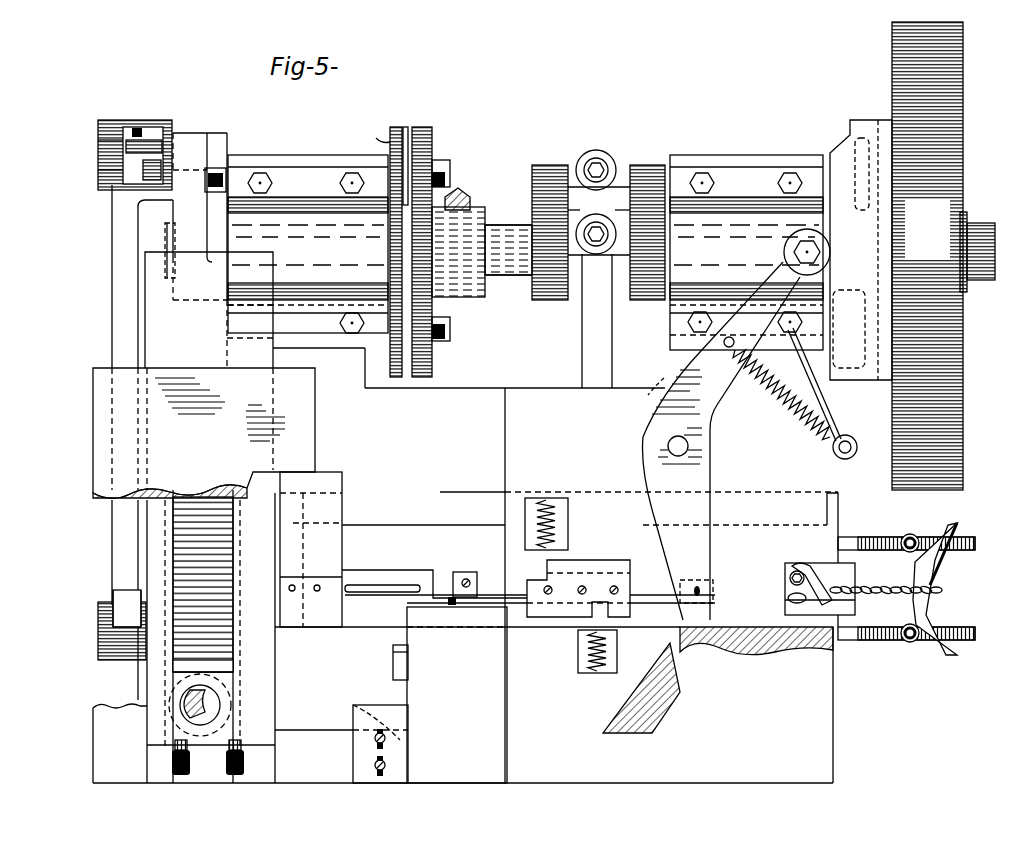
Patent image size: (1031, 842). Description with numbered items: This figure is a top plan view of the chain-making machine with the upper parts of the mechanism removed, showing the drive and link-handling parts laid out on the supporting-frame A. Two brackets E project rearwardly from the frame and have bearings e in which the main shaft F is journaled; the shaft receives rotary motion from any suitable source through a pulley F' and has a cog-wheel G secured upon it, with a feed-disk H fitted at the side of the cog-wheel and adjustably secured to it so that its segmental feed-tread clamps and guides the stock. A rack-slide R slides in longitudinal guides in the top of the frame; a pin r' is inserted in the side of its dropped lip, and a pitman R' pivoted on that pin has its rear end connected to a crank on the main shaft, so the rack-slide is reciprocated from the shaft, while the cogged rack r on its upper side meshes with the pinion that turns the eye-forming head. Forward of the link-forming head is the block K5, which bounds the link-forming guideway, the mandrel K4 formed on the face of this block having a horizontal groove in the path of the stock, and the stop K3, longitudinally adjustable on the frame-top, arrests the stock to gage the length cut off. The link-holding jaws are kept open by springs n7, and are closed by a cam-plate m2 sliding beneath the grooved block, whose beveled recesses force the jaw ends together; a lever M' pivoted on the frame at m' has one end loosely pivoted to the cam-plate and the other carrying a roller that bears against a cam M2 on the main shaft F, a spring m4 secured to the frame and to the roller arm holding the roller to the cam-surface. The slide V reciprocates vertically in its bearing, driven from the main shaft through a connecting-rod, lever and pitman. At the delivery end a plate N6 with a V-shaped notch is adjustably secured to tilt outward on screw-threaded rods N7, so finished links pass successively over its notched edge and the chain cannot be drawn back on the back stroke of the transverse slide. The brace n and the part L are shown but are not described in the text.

The bracket E is at (290, 162).
The bearing e is at (525, 248).
The bracket n is at (372, 134).
The feed-disk H is at (392, 240).
The cog-wheel G is at (448, 252).
The main shaft F is at (577, 241).
The cam M2 is at (861, 250).
The pulley F' is at (927, 256).
The supporting-frame A is at (465, 575).
The slide L is at (497, 549).
The pitman R' is at (115, 484).
The cogged rack r is at (190, 584).
The pin r' is at (109, 625).
The rack-slide R is at (211, 636).
The block K5 is at (457, 695).
The mandrel K4 is at (410, 663).
The stop K3 is at (380, 744).
The slide V is at (674, 710).
The spring n7 is at (560, 520).
The cam-plate m2 is at (578, 588).
The lever M' is at (737, 424).
The pivot m' is at (707, 445).
The spring m4 is at (800, 422).
The screw-threaded rod N7 is at (864, 540).
The plate N6 is at (946, 560).